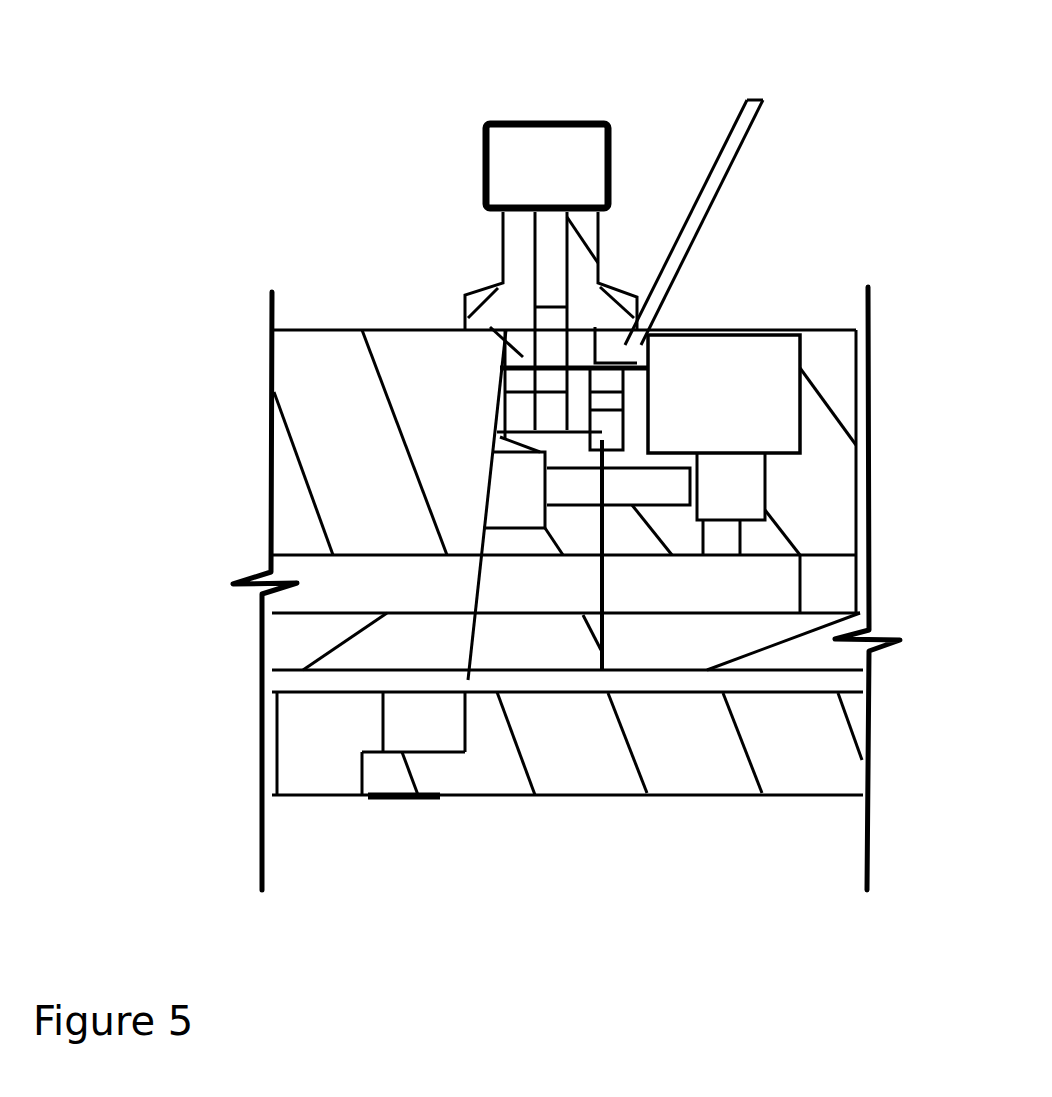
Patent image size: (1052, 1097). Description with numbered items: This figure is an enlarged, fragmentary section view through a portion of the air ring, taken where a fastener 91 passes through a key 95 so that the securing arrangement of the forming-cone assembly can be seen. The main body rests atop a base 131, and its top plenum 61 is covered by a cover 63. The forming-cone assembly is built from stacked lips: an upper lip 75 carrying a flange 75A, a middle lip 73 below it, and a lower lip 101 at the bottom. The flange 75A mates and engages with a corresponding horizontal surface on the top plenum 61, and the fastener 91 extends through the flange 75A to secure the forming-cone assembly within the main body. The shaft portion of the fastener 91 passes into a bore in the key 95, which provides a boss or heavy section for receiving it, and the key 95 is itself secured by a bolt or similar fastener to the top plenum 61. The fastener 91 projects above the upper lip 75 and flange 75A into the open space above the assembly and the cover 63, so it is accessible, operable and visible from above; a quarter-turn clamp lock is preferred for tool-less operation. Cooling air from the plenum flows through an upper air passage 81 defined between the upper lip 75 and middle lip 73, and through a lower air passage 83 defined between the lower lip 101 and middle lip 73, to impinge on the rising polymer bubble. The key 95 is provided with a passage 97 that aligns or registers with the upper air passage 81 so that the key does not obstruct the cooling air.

The top plenum 61 is at (840, 337).
The cover 63 is at (743, 137).
The middle lip 73 is at (318, 640).
The upper lip 75 is at (322, 410).
The flange 75A is at (630, 338).
The upper air passage 81 is at (566, 590).
The lower air passage 83 is at (302, 676).
The fastener 91 is at (565, 135).
The key 95 is at (483, 548).
The passage 97 is at (579, 505).
The lower lip 101 is at (308, 732).
The base 131 is at (592, 763).